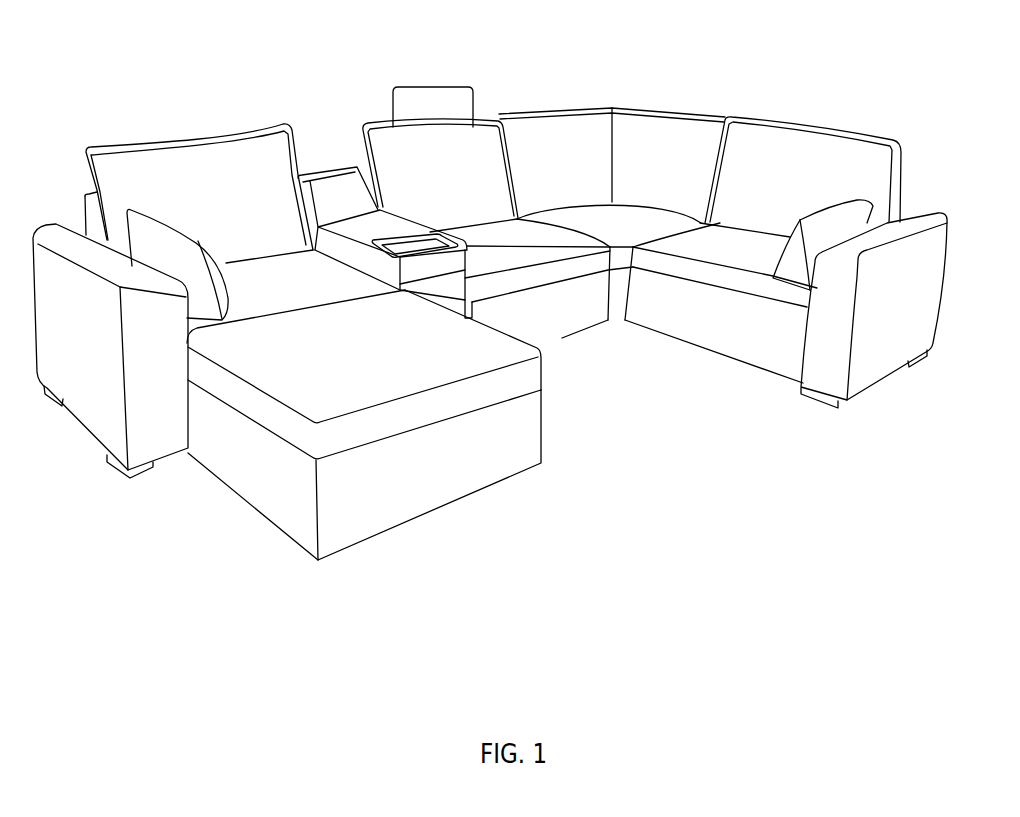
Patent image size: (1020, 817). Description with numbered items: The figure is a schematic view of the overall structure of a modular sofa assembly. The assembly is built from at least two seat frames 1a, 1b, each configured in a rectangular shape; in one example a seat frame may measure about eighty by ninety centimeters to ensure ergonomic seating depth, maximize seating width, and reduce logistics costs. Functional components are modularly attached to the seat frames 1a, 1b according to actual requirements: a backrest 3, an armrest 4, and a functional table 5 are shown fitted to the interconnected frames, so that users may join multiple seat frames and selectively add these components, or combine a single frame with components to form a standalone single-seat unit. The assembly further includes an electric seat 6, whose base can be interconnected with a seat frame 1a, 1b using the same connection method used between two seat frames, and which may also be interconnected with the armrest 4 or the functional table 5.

The seat frame 1a is at (624, 322).
The seat frame 1b is at (783, 362).
The backrest 3 is at (888, 172).
The armrest 4 is at (873, 360).
The functional table 5 is at (331, 162).
The electric seat 6 is at (435, 84).